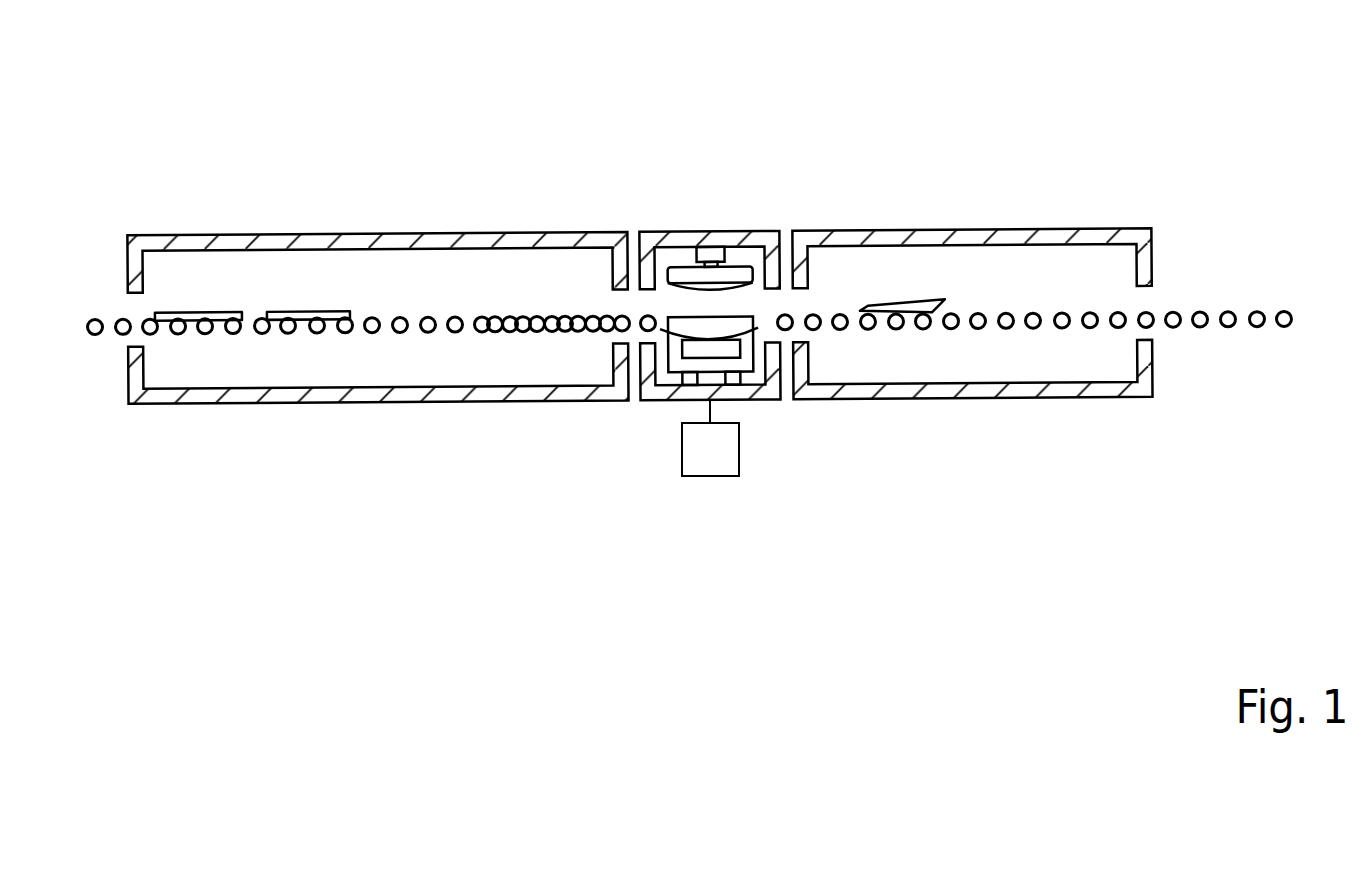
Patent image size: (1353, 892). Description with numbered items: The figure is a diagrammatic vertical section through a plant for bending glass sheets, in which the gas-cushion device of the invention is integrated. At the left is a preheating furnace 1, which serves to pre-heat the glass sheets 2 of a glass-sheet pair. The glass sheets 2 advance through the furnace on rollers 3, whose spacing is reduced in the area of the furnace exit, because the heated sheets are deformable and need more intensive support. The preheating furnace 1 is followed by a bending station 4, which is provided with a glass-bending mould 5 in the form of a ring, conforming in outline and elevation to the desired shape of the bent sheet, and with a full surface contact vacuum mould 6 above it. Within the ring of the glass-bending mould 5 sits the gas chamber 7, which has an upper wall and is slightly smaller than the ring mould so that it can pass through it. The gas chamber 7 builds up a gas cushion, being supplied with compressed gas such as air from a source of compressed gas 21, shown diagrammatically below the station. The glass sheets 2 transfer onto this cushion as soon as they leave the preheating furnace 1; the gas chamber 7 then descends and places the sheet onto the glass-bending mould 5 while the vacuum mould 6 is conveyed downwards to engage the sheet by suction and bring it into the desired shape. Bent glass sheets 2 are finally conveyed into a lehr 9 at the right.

The preheating furnace 1 is at (302, 243).
The glass sheets 2 is at (295, 312).
The rollers 3 is at (428, 332).
The bending station 4 is at (738, 184).
The glass-bending mould 5 is at (662, 330).
The vacuum mould 6 is at (682, 273).
The gas chamber 7 is at (770, 383).
The lehr 9 is at (1075, 232).
The source of compressed gas 21 is at (693, 468).